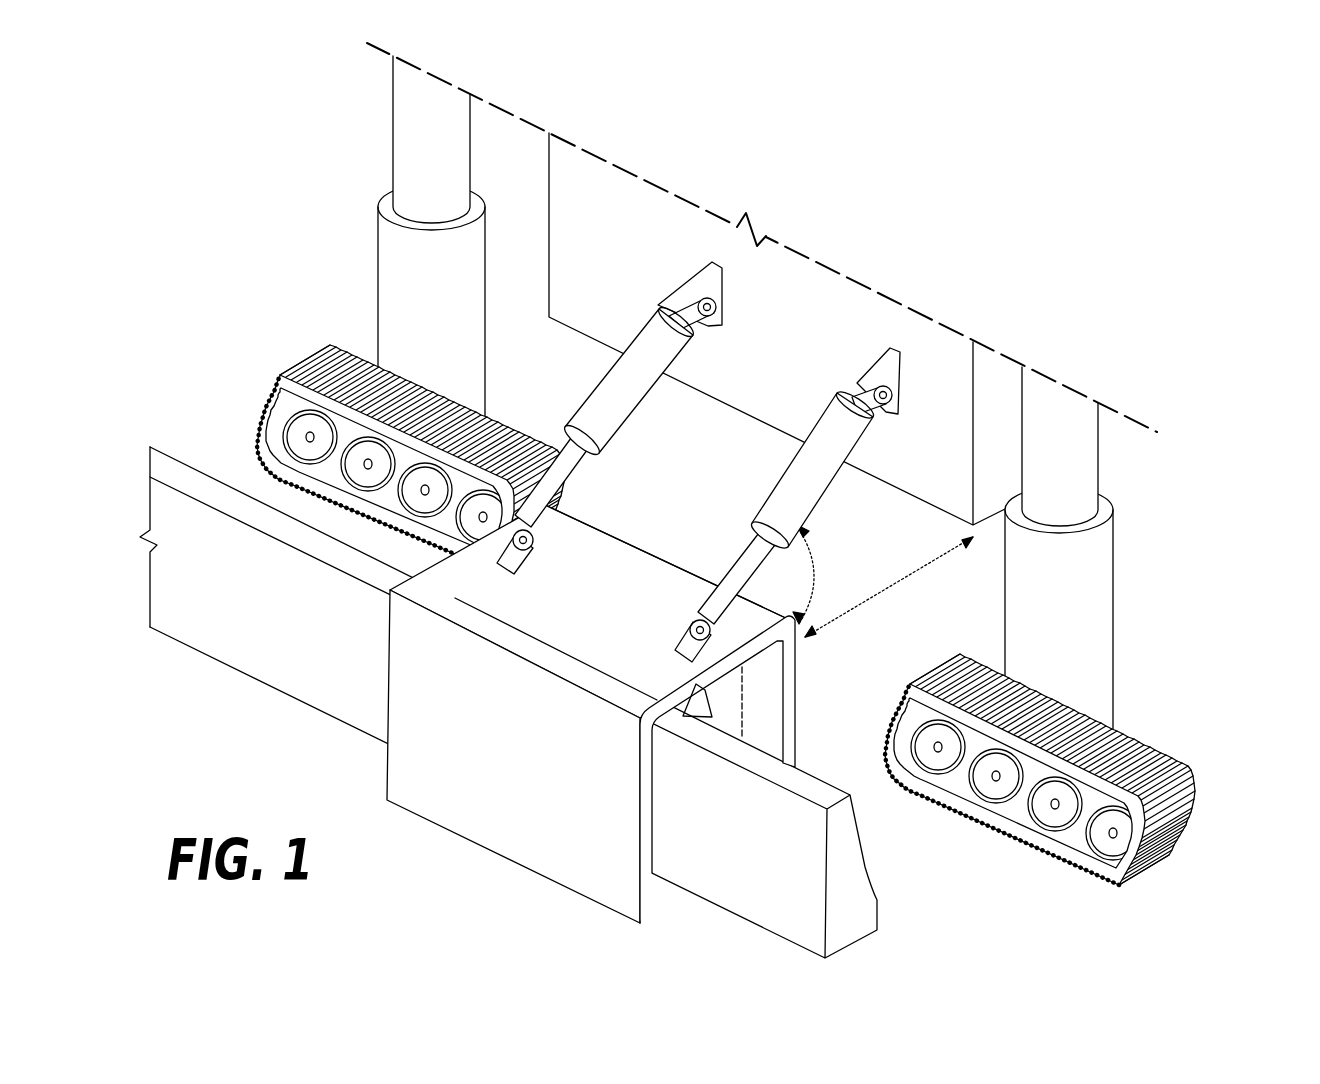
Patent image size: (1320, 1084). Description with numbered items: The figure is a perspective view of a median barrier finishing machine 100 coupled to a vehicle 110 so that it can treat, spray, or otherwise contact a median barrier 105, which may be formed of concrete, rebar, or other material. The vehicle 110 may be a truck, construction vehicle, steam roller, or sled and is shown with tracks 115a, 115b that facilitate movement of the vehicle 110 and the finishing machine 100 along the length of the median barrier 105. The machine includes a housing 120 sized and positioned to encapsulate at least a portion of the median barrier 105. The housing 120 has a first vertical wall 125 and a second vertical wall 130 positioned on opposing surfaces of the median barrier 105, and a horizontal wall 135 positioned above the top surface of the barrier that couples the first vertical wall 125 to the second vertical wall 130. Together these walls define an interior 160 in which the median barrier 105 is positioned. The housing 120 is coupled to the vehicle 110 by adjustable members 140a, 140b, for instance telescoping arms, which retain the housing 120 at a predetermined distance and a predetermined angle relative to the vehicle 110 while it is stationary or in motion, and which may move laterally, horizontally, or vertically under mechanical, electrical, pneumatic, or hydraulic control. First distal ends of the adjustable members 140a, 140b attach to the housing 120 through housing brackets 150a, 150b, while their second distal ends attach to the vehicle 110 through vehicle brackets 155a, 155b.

The median barrier finishing machine 100 is at (703, 501).
The median barrier 105 is at (230, 665).
The vehicle 110 is at (1093, 448).
The track 115a is at (272, 392).
The track 115b is at (1182, 800).
The housing 120 is at (629, 724).
The first vertical wall 125 is at (500, 855).
The second vertical wall 130 is at (798, 676).
The horizontal wall 135 is at (641, 543).
The adjustable member 140a is at (586, 392).
The adjustable member 140b is at (772, 478).
The housing bracket 150a is at (498, 555).
The housing bracket 150b is at (668, 648).
The vehicle bracket 155a is at (700, 273).
The vehicle bracket 155b is at (872, 358).
The interior 160 is at (770, 710).